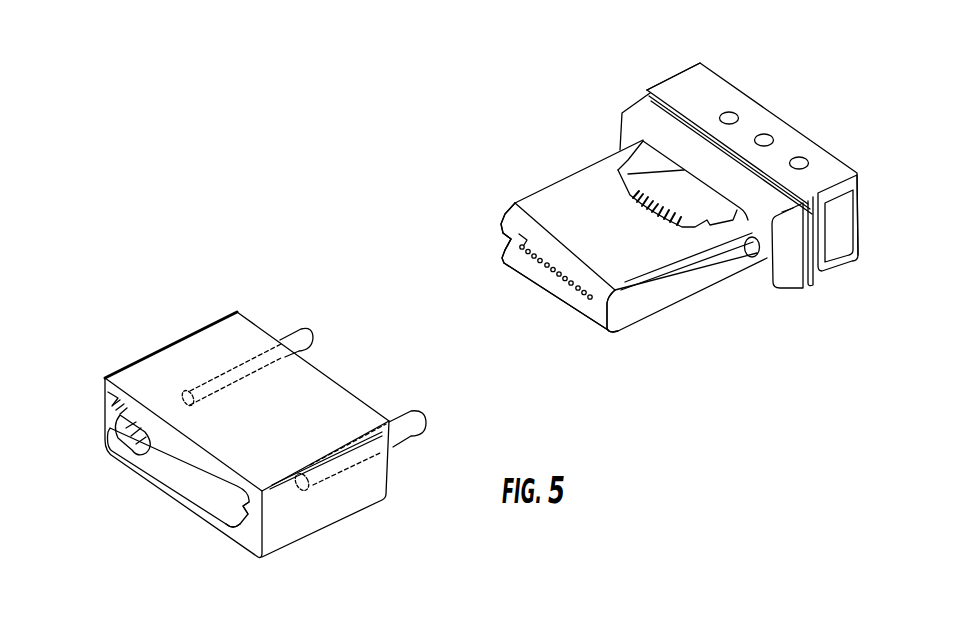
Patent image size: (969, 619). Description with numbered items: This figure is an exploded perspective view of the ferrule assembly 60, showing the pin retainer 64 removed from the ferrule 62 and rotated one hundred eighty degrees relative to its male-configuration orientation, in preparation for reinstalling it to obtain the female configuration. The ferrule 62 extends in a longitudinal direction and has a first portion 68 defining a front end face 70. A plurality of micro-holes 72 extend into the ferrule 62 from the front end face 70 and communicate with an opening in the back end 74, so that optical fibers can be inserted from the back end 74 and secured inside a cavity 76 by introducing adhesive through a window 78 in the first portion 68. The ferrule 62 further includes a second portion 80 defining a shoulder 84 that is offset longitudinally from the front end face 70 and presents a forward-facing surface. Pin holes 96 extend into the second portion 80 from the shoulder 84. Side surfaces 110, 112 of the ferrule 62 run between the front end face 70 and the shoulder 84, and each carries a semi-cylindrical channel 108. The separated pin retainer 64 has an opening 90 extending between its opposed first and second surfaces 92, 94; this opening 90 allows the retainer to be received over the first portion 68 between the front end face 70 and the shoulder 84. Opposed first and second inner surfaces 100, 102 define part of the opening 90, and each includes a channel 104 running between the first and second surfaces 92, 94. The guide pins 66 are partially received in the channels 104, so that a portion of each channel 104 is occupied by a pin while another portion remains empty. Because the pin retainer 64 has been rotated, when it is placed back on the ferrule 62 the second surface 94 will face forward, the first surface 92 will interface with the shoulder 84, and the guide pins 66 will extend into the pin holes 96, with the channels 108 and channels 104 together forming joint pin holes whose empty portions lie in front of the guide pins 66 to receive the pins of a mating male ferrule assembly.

The ferrule assembly 60 is at (505, 50).
The ferrule 62 is at (556, 128).
The pin retainer 64 is at (172, 325).
The guide pins 66 is at (289, 327).
The first portion 68 is at (562, 185).
The front end face 70 is at (520, 232).
The micro-holes 72 is at (540, 262).
The back end 74 is at (783, 121).
The cavity 76 is at (697, 209).
The window 78 is at (680, 228).
The second portion 80 is at (676, 82).
The shoulder 84 is at (627, 126).
The opening 90 is at (182, 473).
The first surface 92 is at (114, 402).
The second surface 94 is at (332, 380).
The pin holes 96 is at (750, 255).
The first inner surface 100 is at (135, 453).
The second inner surface 102 is at (230, 518).
The channel 104 is at (117, 422).
The channels 108 is at (513, 242).
The side surface 110 is at (505, 250).
The side surface 112 is at (620, 322).